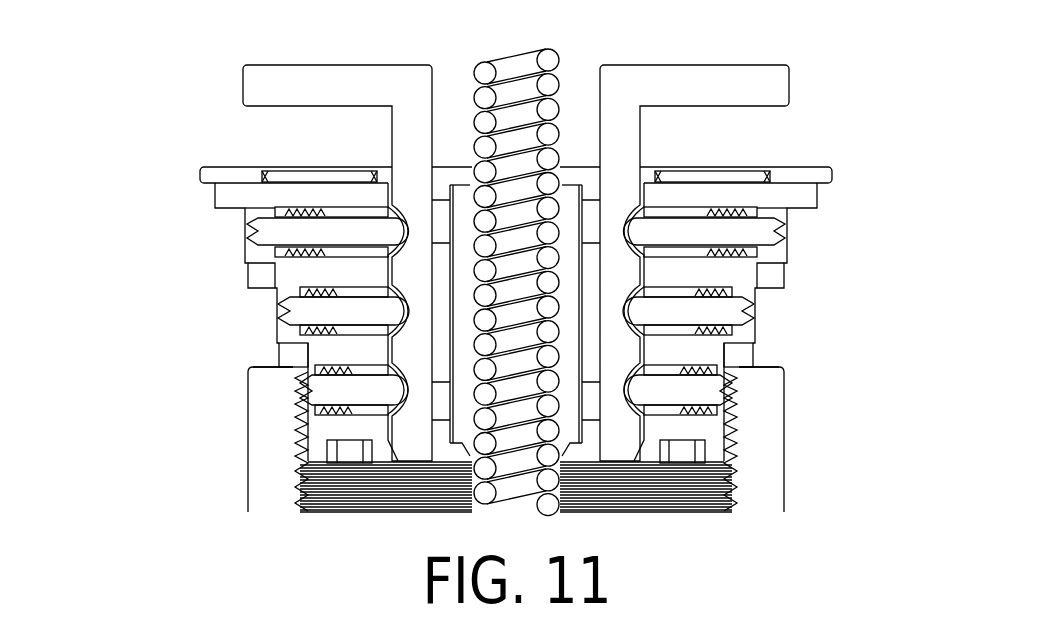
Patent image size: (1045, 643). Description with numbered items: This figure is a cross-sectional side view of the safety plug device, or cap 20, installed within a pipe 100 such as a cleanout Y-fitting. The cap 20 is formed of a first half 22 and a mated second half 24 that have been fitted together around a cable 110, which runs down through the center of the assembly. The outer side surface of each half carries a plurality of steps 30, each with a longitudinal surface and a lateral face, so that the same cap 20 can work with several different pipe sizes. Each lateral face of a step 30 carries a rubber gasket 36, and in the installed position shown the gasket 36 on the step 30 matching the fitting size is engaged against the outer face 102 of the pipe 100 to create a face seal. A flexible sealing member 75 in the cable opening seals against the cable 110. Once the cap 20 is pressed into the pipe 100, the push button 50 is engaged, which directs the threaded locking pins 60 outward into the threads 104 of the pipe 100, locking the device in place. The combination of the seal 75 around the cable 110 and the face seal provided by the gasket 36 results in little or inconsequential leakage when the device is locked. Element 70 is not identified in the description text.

The cap 20 is at (158, 119).
The first half 22 is at (205, 177).
The second half 24 is at (830, 160).
The step 30 is at (756, 339).
The rubber gasket 36 is at (289, 353).
The push button 50 is at (303, 78).
The threaded locking pins 60 is at (793, 233).
The base floor 70 is at (403, 460).
The flexible sealing member 75 is at (463, 205).
The pipe 100 is at (762, 473).
The outer face 102 is at (762, 368).
The threads 104 is at (688, 498).
The cable 110 is at (550, 62).